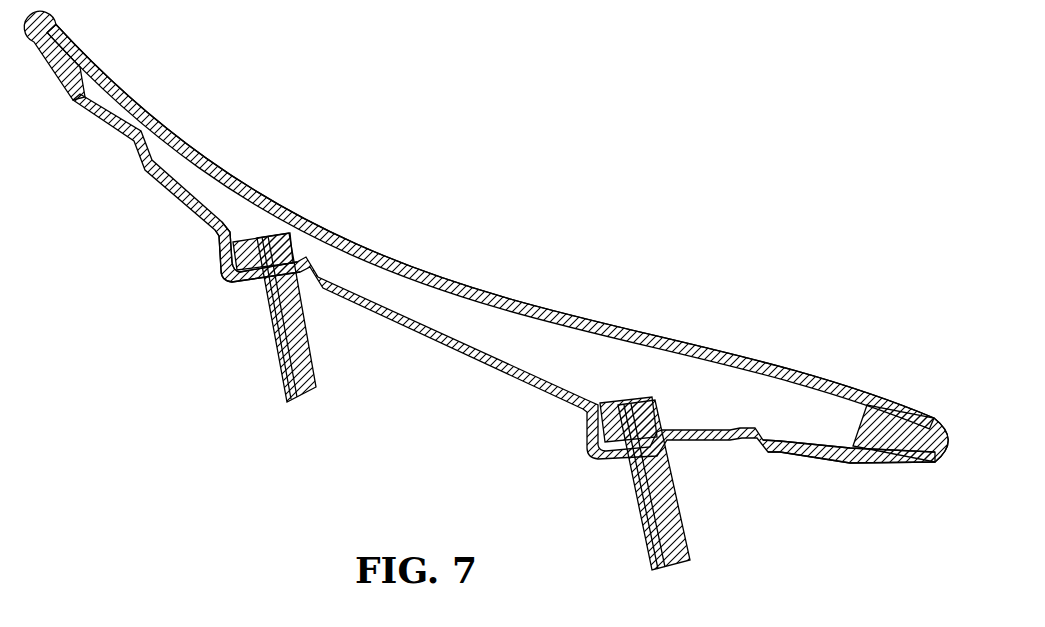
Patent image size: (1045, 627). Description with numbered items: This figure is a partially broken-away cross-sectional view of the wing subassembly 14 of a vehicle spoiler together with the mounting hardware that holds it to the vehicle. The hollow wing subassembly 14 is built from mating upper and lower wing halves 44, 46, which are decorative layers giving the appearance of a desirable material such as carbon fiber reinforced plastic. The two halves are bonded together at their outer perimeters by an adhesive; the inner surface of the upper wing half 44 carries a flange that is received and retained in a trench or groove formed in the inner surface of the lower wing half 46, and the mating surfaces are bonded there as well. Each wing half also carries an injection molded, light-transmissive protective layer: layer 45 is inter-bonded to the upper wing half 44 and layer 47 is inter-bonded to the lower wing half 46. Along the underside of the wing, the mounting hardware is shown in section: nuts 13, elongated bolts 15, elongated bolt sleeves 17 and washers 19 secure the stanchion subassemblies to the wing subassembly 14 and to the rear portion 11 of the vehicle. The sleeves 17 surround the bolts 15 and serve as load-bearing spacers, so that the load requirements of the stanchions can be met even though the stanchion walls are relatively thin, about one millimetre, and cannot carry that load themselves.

The rear portion 11 is at (504, 323).
The nuts 13 is at (235, 268).
The wing subassembly 14 is at (753, 360).
The elongated bolts 15 is at (313, 384).
The elongated bolt sleeves 17 is at (311, 338).
The washers 19 is at (250, 282).
The upper wing half 44 is at (851, 388).
The protective layer 45 is at (574, 319).
The lower wing half 46 is at (832, 458).
The protective layer 47 is at (913, 463).